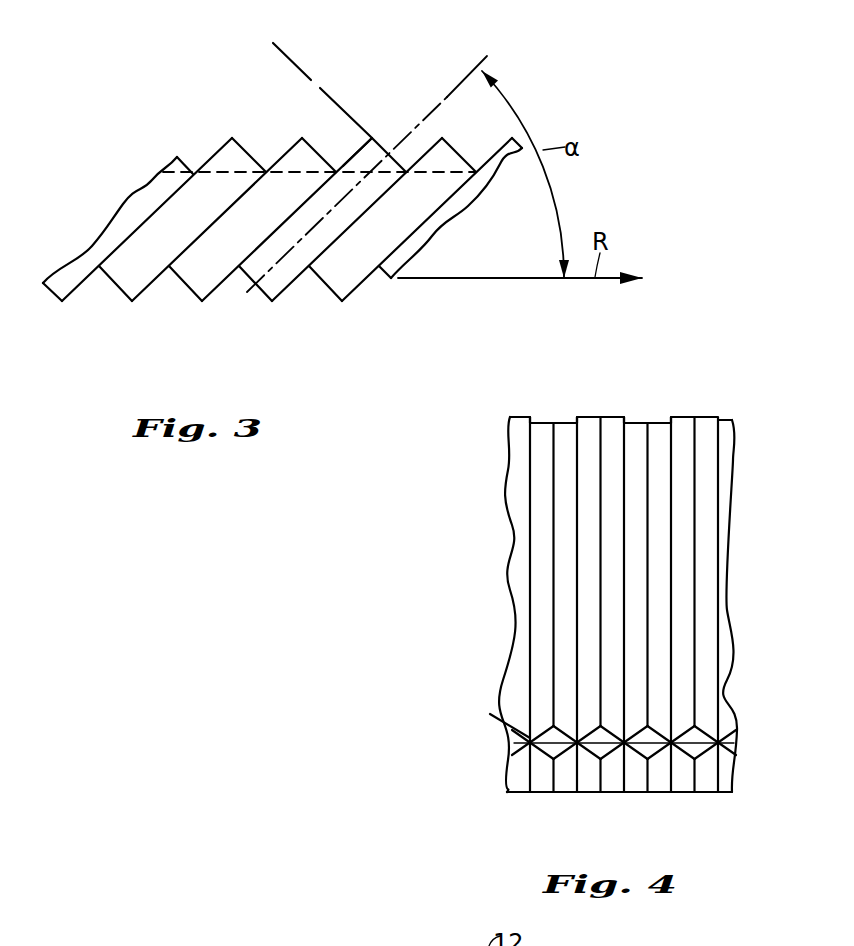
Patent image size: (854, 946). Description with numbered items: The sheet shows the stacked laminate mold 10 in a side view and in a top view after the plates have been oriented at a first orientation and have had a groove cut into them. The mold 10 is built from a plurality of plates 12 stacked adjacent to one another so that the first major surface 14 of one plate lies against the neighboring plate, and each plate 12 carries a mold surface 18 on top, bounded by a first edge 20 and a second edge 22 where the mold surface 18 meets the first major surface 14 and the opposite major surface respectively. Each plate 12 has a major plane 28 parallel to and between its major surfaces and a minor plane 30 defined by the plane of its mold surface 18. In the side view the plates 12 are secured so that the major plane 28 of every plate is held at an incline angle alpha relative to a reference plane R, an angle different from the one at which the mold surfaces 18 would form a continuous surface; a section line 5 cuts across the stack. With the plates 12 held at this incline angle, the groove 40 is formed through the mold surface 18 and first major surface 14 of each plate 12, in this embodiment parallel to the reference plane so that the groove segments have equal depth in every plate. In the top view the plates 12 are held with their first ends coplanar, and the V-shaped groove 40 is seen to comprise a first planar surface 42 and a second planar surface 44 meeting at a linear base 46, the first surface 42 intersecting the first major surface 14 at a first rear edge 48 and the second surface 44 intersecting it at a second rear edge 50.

In FIG. 4, the stacked laminate mold 10 is at (731, 378).
In FIG. 3, the plate 12 is at (117, 243).
In FIG. 4, the plate 12 is at (588, 677).
In FIG. 3, the first major surface 14 is at (340, 168).
In FIG. 4, the first major surface 14 is at (633, 427).
In FIG. 3, the mold surface 18 is at (385, 152).
In FIG. 4, the mold surface 18 is at (655, 437).
In FIG. 3, the first edge 20 is at (343, 165).
In FIG. 4, the first edge 20 is at (647, 426).
In FIG. 3, the second edge 22 is at (398, 182).
In FIG. 4, the second edge 22 is at (670, 433).
In FIG. 3, the major plane 28 is at (447, 97).
In FIG. 3, the minor plane 30 is at (282, 41).
In FIG. 3, the groove 40 is at (181, 155).
In FIG. 4, the groove 40 is at (542, 761).
In FIG. 4, the first planar surface 42 is at (698, 736).
In FIG. 4, the second planar surface 44 is at (690, 751).
In FIG. 3, the base 46 is at (228, 172).
In FIG. 4, the first rear edge 48 is at (662, 725).
In FIG. 4, the second rear edge 50 is at (580, 752).
In FIG. 3, the section line 5- 5 is at (265, 172).